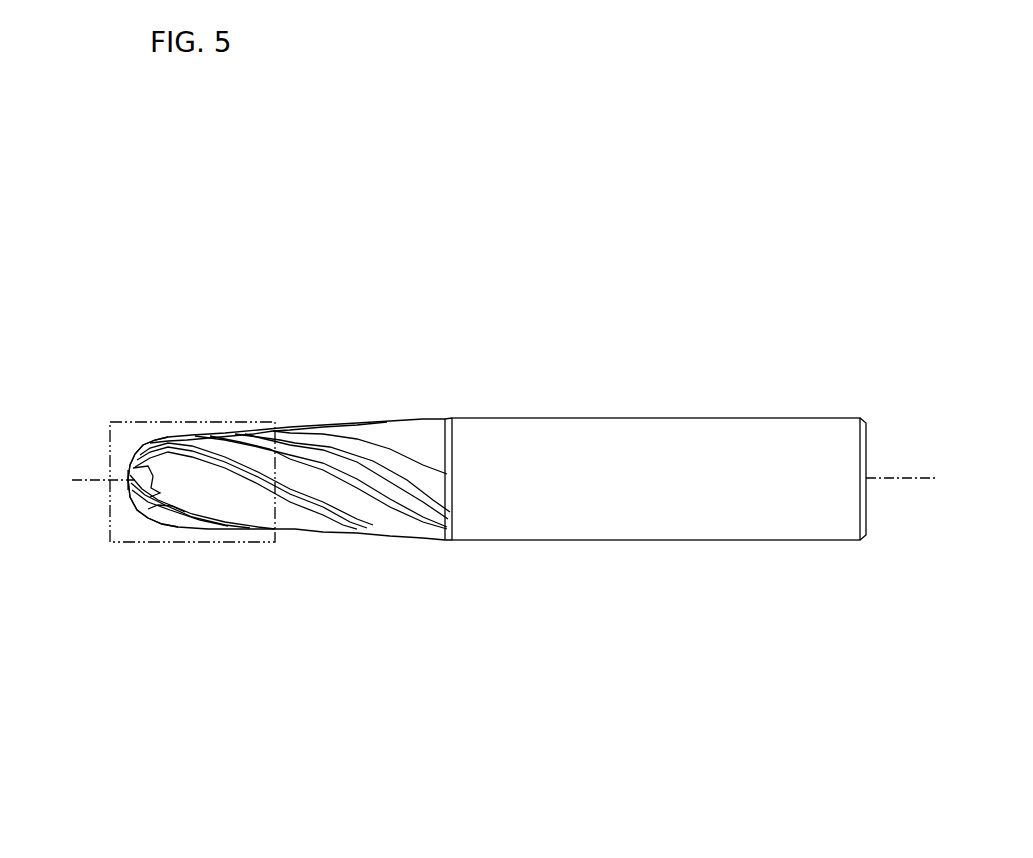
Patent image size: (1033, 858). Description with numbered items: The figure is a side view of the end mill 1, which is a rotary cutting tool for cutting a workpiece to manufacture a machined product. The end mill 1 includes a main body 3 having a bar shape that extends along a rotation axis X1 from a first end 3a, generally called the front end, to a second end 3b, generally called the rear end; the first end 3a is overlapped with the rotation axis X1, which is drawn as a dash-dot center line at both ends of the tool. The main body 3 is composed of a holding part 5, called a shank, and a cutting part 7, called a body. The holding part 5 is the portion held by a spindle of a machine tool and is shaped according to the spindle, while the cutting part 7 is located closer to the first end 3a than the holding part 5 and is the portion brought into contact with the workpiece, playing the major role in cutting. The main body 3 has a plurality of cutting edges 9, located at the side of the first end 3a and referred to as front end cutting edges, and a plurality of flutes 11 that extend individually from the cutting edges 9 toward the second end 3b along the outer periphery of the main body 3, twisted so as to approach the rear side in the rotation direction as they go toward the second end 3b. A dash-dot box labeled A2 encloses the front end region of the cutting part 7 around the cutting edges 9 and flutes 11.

The end mill 1 is at (490, 494).
The main body 3 is at (490, 524).
The first end 3a is at (87, 517).
The second end 3b is at (897, 522).
The holding part 5 is at (693, 523).
The cutting part 7 is at (249, 524).
The cutting edge 9 is at (128, 478).
The flute 11 is at (295, 475).
The rotation axis X1 is at (491, 470).
The region A2 is at (262, 402).